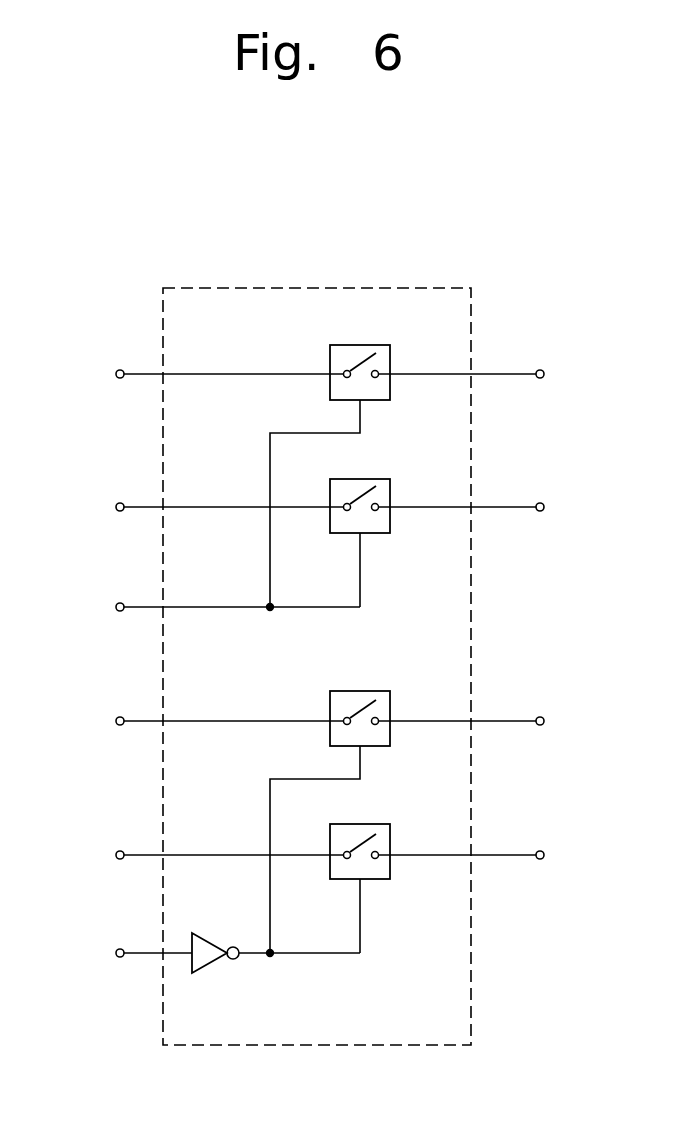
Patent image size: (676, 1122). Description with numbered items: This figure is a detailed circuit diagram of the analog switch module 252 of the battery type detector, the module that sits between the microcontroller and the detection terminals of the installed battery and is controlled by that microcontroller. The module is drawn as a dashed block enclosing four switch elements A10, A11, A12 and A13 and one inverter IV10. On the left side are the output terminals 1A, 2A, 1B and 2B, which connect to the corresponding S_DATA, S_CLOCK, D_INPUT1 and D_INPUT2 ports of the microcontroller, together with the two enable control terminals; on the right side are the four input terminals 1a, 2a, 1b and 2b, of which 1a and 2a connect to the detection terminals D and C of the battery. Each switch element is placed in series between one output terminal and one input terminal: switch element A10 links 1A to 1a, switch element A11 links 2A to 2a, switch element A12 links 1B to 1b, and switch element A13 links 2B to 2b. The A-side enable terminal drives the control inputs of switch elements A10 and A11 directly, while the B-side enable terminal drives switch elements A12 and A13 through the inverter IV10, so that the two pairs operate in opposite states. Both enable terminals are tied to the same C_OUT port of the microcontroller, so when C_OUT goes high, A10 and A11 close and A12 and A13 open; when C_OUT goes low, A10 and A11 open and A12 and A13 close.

The analog switch module 252 is at (403, 288).
The switch element A10 is at (378, 345).
The switch element A11 is at (378, 479).
The switch element A12 is at (378, 691).
The switch element A13 is at (378, 824).
The inverter IV10 is at (210, 973).
The output terminal 1A is at (102, 374).
The output terminal 2A is at (102, 507).
The output terminal 1B is at (102, 721).
The output terminal 2B is at (102, 855).
The input terminal 1a is at (555, 374).
The input terminal 2a is at (555, 507).
The input terminal 1b is at (555, 721).
The input terminal 2b is at (555, 855).